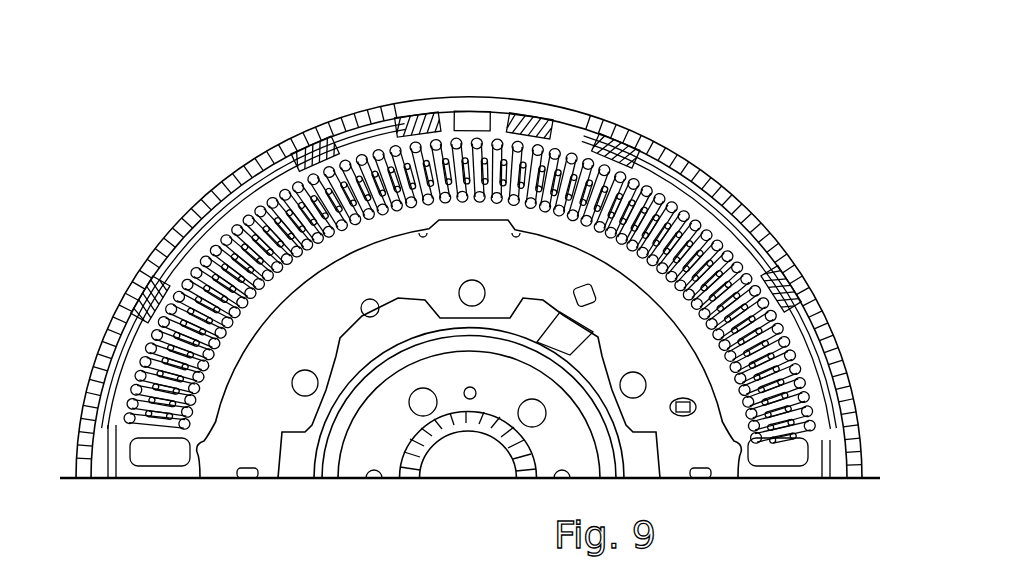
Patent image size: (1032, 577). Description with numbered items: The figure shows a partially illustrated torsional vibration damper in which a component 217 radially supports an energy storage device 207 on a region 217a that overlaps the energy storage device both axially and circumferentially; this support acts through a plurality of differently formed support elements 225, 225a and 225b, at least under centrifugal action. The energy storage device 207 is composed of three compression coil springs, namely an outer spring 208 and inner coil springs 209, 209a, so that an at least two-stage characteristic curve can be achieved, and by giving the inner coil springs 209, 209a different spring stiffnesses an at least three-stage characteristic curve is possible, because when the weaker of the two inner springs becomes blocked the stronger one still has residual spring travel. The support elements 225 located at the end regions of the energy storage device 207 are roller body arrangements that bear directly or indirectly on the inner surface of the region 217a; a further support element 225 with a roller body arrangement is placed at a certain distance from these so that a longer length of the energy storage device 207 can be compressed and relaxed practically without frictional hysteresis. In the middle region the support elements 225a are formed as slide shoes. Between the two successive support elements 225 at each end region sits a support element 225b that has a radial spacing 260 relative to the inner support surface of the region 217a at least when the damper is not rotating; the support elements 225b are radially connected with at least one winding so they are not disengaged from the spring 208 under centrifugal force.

The energy storage device 207 is at (700, 316).
The compression coil spring 208 is at (693, 320).
The inner coil spring 209 is at (782, 337).
The inner coil spring 209a is at (160, 385).
The component 217 is at (337, 127).
The region 217a is at (587, 127).
The support element 225 is at (240, 203).
The support element 225a is at (527, 127).
The support element 225b is at (115, 284).
The radial spacing 260 is at (195, 275).